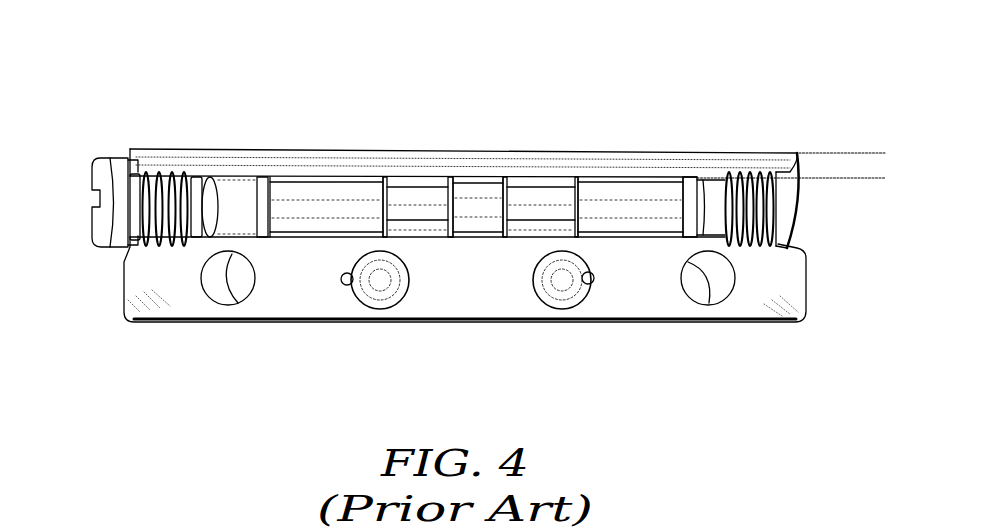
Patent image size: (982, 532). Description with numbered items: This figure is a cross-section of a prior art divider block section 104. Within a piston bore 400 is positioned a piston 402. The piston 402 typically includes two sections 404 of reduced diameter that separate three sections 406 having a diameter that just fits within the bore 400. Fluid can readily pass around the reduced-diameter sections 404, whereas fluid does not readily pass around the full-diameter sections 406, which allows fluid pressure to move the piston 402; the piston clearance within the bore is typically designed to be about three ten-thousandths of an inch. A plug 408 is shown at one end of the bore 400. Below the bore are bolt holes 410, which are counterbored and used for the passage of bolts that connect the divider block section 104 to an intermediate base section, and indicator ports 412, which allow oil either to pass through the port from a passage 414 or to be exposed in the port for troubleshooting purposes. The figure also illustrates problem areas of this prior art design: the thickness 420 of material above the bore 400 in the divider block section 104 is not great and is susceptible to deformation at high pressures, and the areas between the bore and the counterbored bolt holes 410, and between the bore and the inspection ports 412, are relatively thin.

The divider block section 104 is at (714, 52).
The piston bore 400 is at (238, 198).
The piston 402 is at (328, 176).
The sections of reduced diameter 404 is at (413, 176).
The sections having a diameter that just fits within the bore 406 is at (300, 176).
The plug 408 is at (100, 150).
The bolt holes 410 is at (213, 293).
The indicator ports 412 is at (382, 309).
The passage 414 is at (345, 286).
The thickness 420 is at (849, 181).